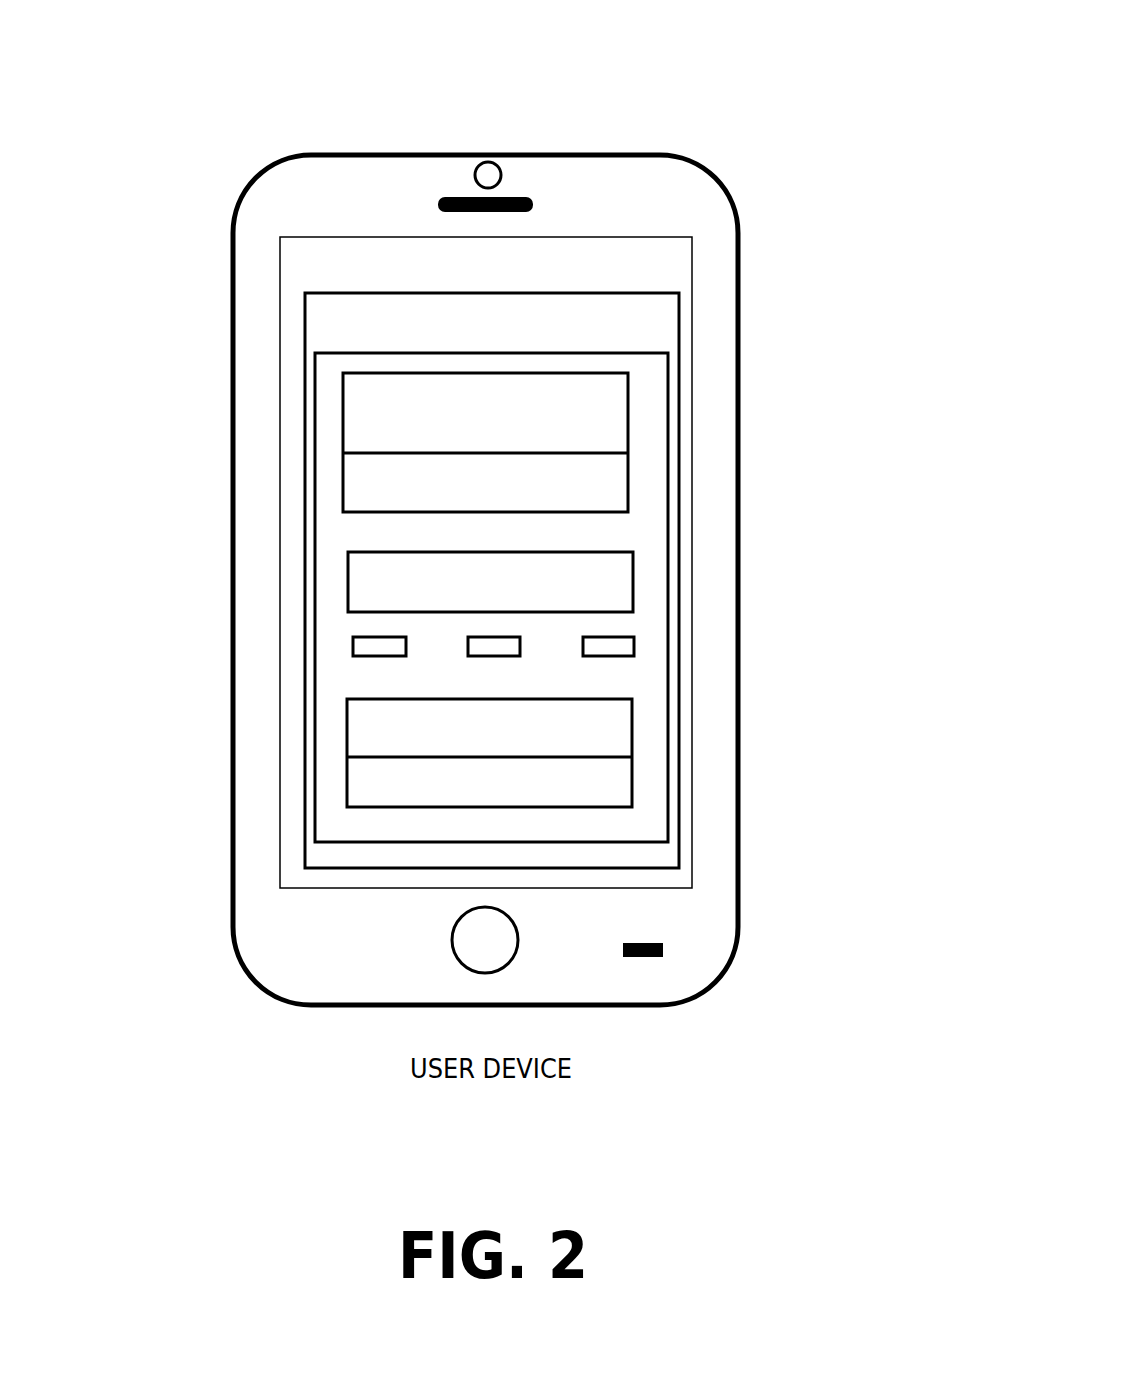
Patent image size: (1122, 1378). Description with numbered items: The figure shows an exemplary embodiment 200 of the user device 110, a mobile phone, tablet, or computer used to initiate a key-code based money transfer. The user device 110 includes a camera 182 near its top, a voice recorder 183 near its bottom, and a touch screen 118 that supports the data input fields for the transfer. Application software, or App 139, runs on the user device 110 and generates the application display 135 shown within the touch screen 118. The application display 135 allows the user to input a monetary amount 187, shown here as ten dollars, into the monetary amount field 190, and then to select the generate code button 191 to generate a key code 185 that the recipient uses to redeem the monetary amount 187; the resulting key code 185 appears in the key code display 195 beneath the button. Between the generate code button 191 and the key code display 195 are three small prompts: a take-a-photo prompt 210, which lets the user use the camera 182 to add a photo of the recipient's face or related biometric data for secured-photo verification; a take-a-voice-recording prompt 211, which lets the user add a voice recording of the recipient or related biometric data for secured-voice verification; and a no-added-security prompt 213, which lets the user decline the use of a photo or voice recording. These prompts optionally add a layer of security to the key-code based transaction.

The exemplary embodiment 200 is at (882, 72).
The user device 110 is at (237, 208).
The camera 182 is at (500, 166).
The touch screen 118 is at (692, 263).
The application software (App) 139 is at (305, 293).
The application display 135 is at (668, 355).
The monetary amount field 190 is at (343, 373).
The monetary amount 187 is at (628, 497).
The generate code button 191 is at (348, 552).
The take-a-photo prompt 210 is at (353, 645).
The no-added-security prompt 213 is at (468, 637).
The take-a-voice-recording prompt 211 is at (634, 638).
The key code display 195 is at (631, 700).
The key code 185 is at (631, 790).
The voice recorder 183 is at (653, 958).